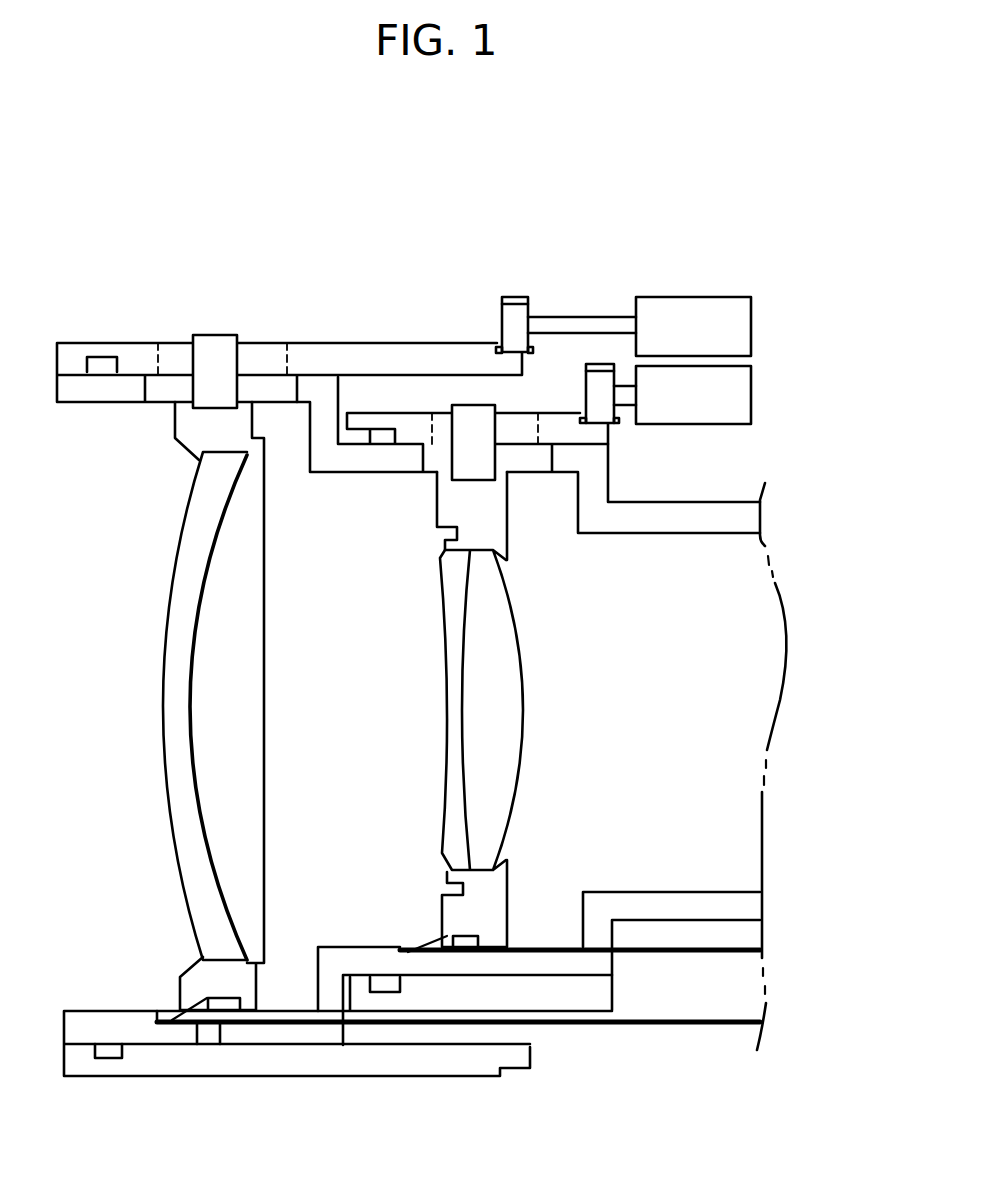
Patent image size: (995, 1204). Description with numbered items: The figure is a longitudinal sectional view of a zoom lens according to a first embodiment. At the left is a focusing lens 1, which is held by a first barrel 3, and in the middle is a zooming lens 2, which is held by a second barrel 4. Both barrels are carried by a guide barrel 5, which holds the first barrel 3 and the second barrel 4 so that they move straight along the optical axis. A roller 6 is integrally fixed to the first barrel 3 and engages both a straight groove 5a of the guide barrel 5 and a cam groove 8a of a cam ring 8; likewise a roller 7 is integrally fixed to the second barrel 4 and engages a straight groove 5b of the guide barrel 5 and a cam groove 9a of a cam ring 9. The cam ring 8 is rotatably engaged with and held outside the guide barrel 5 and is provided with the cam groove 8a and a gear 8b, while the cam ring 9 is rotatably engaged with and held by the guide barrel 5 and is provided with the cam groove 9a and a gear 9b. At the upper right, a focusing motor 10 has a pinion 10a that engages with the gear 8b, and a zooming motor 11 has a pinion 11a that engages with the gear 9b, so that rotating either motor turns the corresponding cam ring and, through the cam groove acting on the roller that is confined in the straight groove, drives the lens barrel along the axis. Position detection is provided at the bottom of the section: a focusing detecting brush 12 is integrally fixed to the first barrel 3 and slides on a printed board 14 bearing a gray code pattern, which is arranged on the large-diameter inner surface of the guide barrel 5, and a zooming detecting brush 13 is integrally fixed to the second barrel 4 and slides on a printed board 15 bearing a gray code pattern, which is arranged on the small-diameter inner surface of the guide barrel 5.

The focusing lens 1 is at (222, 822).
The zooming lens 2 is at (497, 827).
The first barrel 3 is at (230, 987).
The second barrel 4 is at (488, 925).
The guide barrel 5 is at (747, 907).
The straight groove 5a is at (172, 382).
The straight groove 5b is at (518, 465).
The roller 6 is at (227, 343).
The roller 7 is at (463, 417).
The cam ring 8 is at (90, 1063).
The cam groove 8a is at (270, 353).
The gear 8b is at (498, 347).
The cam ring 9 is at (363, 1000).
The cam groove 9a is at (527, 435).
The gear 9b is at (582, 413).
The focusing motor 10 is at (733, 308).
The pinion 10a is at (517, 313).
The zooming motor 11 is at (740, 378).
The pinion 11a is at (603, 382).
The focusing detecting brush 12 is at (200, 1027).
The zooming detecting brush 13 is at (440, 960).
The printed board 14 is at (752, 1023).
The printed board 15 is at (743, 950).